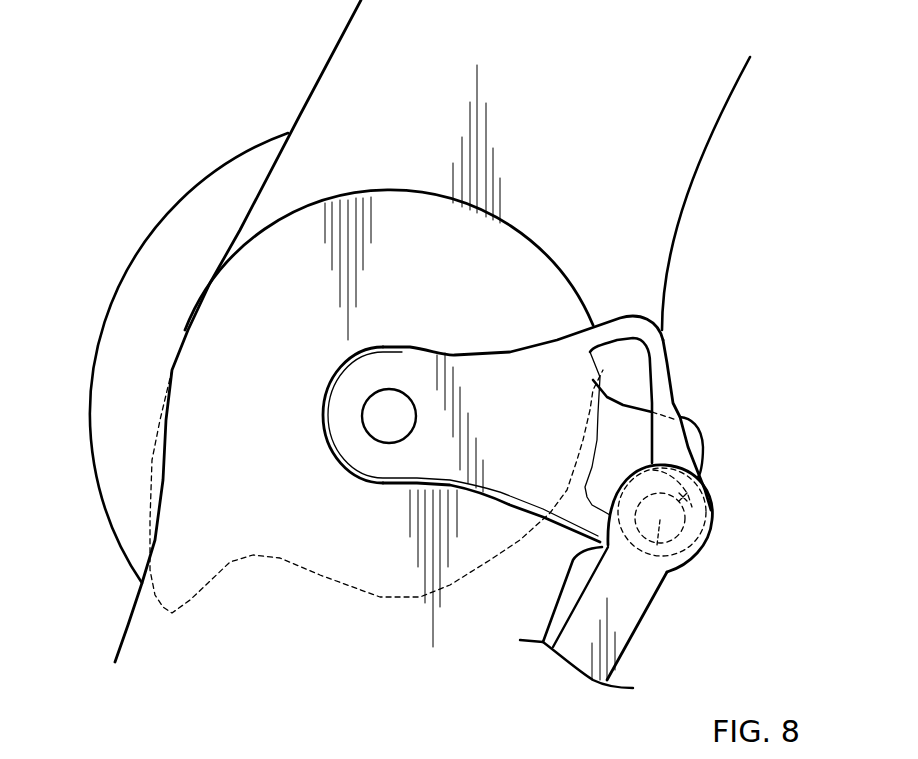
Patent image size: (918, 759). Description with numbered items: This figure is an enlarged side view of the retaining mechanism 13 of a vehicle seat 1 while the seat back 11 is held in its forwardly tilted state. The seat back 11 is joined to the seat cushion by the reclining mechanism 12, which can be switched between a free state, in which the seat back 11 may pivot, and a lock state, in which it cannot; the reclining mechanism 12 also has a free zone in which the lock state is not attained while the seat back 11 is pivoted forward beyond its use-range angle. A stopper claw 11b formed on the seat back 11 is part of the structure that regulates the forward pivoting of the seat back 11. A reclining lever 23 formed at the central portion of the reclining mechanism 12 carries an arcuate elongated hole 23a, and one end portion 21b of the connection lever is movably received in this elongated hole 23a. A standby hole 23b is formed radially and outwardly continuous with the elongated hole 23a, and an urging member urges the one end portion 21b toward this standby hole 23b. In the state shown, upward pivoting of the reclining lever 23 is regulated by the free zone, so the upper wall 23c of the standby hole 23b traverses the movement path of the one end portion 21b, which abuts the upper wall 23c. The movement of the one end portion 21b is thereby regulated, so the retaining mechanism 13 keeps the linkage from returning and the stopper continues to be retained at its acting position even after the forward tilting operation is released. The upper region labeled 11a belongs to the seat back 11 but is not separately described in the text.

The vehicle seat 1 is at (93, 235).
The seat back 11 is at (420, 331).
The upper body portion 11a is at (367, 95).
The stopper claw 11b is at (208, 583).
The reclining mechanism 12 is at (530, 283).
The retaining mechanism 13 is at (661, 576).
The one end portion of connection lever 21b is at (659, 520).
The reclining lever 23 is at (550, 420).
The arcuate elongated hole 23a is at (652, 389).
The standby hole 23b is at (705, 500).
The upper wall of standby hole 23c is at (685, 482).